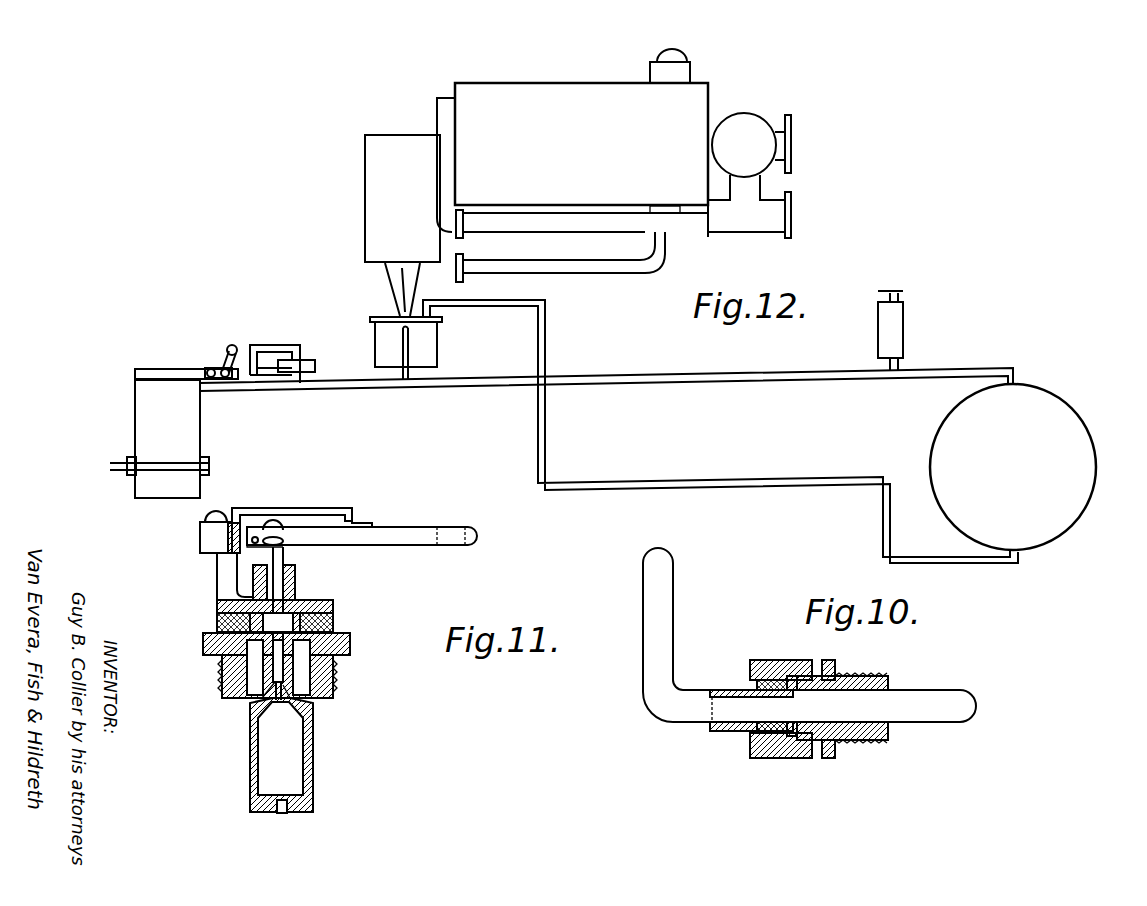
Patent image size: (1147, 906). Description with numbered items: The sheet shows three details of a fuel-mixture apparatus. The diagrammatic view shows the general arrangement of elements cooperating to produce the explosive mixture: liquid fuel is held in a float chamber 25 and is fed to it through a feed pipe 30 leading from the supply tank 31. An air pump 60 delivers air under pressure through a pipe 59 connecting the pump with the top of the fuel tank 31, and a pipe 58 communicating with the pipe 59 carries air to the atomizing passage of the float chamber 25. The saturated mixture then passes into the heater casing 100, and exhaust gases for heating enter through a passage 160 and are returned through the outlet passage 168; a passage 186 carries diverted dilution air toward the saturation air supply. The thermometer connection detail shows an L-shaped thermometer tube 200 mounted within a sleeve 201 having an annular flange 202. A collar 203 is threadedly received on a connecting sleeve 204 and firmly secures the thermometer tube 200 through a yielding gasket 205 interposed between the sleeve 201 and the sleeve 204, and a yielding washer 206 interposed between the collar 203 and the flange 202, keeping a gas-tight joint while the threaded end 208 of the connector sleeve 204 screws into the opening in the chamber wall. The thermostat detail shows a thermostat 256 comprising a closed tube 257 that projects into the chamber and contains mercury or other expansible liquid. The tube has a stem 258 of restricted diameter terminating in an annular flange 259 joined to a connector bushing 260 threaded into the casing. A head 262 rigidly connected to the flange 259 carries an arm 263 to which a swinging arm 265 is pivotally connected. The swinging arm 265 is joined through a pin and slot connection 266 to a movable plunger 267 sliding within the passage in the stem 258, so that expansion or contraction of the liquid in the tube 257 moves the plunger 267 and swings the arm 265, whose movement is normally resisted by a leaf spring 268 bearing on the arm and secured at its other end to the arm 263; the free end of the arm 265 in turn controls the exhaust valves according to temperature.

In FIG. 12, the heater casing 100 is at (392, 212).
In FIG. 12, the passage 186 is at (582, 262).
In FIG. 12, the passage 160 is at (790, 141).
In FIG. 12, the outlet passage 168 is at (790, 213).
In FIG. 12, the float chamber 25 is at (428, 348).
In FIG. 12, the pipe 58 is at (410, 378).
In FIG. 12, the pipe 59 is at (610, 379).
In FIG. 12, the feed pipe 30 is at (655, 484).
In FIG. 12, the supply tank 31 is at (1085, 463).
In FIG. 12, the air pump 60 is at (190, 441).
In FIG. 11, the leaf spring 268 is at (318, 507).
In FIG. 11, the swinging arm 265 is at (428, 521).
In FIG. 11, the pin and slot connection 266 is at (288, 548).
In FIG. 11, the arm 263 is at (215, 582).
In FIG. 11, the plunger 267 is at (276, 593).
In FIG. 11, the head 262 is at (222, 604).
In FIG. 11, the annular flange 259 is at (340, 620).
In FIG. 11, the connector bushing 260 is at (348, 641).
In FIG. 11, the thermostat 256 is at (333, 683).
In FIG. 11, the stem 258 is at (260, 703).
In FIG. 11, the closed tube 257 is at (315, 774).
In FIG. 10, the thermometer tube 200 is at (652, 567).
In FIG. 10, the sleeve 201 is at (733, 733).
In FIG. 10, the annular flange 202 is at (768, 760).
In FIG. 10, the collar 203 is at (765, 660).
In FIG. 10, the connecting sleeve 204 is at (835, 669).
In FIG. 10, the yielding gasket 205 is at (789, 684).
In FIG. 10, the yielding washer 206 is at (750, 690).
In FIG. 10, the threaded end 208 is at (877, 746).